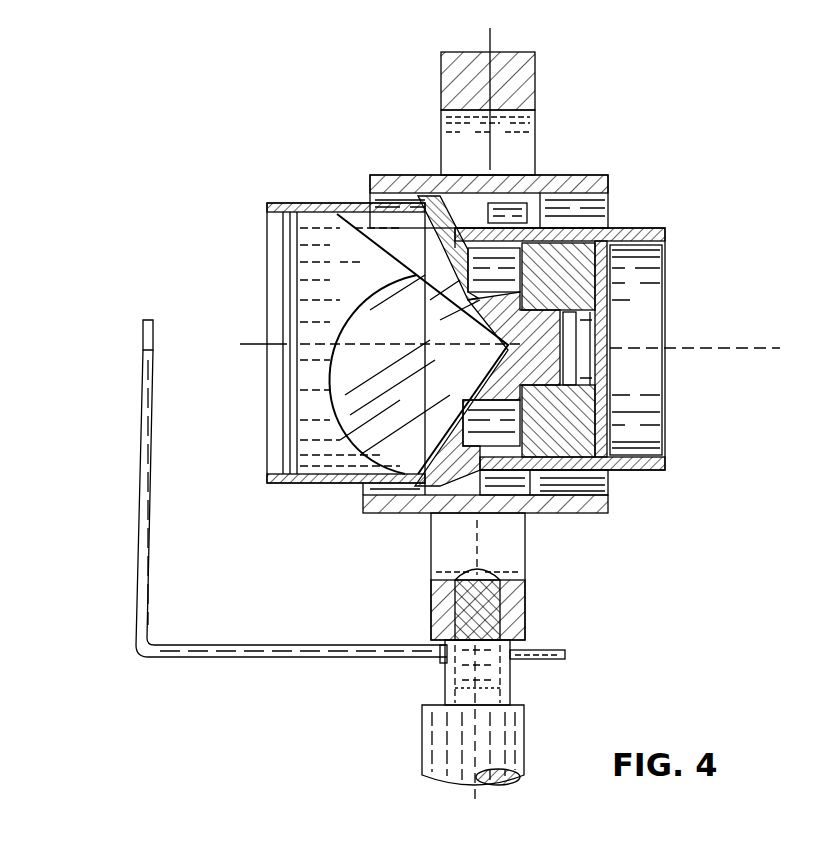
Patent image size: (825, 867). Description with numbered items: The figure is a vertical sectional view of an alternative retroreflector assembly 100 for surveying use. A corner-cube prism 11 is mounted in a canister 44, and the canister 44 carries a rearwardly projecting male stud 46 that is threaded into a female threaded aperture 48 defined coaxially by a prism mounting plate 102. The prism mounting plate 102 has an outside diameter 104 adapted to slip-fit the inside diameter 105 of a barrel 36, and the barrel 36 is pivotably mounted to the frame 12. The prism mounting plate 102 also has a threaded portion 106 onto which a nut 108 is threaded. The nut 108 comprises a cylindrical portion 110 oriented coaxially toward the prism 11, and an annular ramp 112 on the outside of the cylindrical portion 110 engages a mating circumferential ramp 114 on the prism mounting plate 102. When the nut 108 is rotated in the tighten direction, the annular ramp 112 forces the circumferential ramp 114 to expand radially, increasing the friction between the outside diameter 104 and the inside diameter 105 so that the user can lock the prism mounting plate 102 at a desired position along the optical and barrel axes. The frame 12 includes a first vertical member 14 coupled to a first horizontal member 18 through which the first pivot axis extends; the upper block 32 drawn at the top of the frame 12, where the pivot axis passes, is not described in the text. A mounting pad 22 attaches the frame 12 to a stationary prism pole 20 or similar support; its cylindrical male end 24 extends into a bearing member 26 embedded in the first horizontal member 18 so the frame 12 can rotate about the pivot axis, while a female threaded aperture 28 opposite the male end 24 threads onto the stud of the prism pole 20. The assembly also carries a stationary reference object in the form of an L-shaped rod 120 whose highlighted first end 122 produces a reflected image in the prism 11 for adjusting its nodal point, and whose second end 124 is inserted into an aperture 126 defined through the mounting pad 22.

The retroreflector assembly 100 is at (636, 102).
The frame 12 is at (408, 104).
The upper mounting block 32 is at (535, 72).
The first vertical member 14 is at (522, 127).
The barrel 36 is at (598, 178).
The annular ramp 112 is at (548, 214).
The circumferential ramp 114 is at (445, 192).
The canister 44 is at (302, 484).
The corner-cube prism 11 is at (332, 245).
The female threaded aperture 48 is at (612, 338).
The nut 108 is at (650, 230).
The threaded portion 106 is at (617, 262).
The prism mounting plate 102 is at (620, 414).
The male stud 46 is at (617, 366).
The cylindrical portion 110 is at (608, 480).
The inside diameter 105 is at (612, 488).
The outside diameter 104 is at (597, 520).
The first horizontal member 18 is at (517, 600).
The male end 24 is at (440, 572).
The bearing member 26 is at (500, 578).
The mounting pad 22 is at (512, 688).
The female threaded aperture 28 is at (447, 688).
The prism pole 20 is at (526, 730).
The second end 124 is at (548, 653).
The aperture 126 is at (440, 658).
The first end 122 is at (154, 330).
The L-shaped rod 120 is at (278, 648).